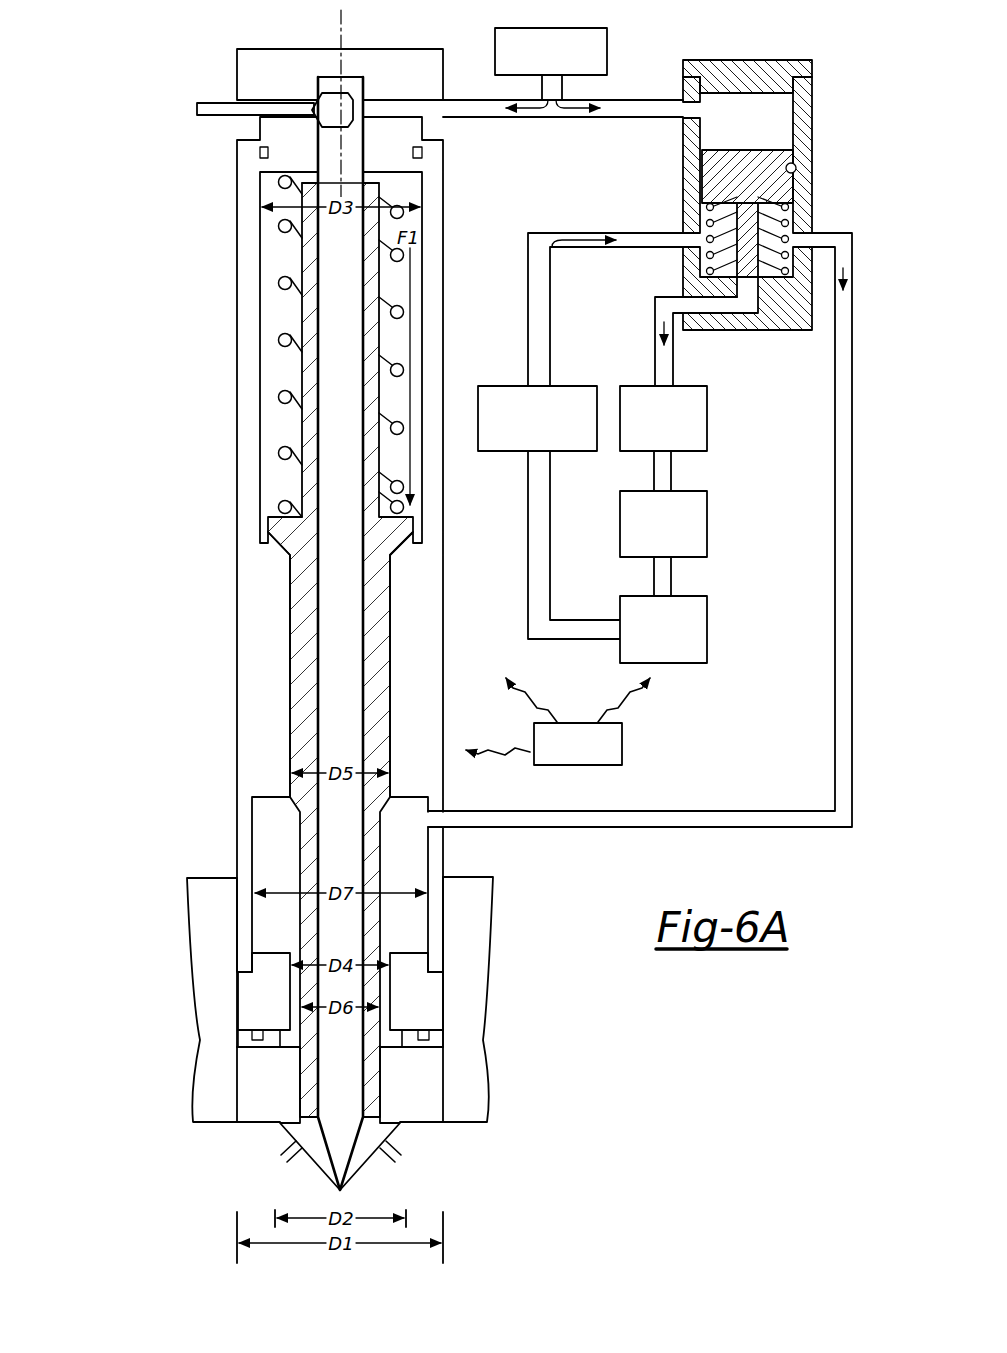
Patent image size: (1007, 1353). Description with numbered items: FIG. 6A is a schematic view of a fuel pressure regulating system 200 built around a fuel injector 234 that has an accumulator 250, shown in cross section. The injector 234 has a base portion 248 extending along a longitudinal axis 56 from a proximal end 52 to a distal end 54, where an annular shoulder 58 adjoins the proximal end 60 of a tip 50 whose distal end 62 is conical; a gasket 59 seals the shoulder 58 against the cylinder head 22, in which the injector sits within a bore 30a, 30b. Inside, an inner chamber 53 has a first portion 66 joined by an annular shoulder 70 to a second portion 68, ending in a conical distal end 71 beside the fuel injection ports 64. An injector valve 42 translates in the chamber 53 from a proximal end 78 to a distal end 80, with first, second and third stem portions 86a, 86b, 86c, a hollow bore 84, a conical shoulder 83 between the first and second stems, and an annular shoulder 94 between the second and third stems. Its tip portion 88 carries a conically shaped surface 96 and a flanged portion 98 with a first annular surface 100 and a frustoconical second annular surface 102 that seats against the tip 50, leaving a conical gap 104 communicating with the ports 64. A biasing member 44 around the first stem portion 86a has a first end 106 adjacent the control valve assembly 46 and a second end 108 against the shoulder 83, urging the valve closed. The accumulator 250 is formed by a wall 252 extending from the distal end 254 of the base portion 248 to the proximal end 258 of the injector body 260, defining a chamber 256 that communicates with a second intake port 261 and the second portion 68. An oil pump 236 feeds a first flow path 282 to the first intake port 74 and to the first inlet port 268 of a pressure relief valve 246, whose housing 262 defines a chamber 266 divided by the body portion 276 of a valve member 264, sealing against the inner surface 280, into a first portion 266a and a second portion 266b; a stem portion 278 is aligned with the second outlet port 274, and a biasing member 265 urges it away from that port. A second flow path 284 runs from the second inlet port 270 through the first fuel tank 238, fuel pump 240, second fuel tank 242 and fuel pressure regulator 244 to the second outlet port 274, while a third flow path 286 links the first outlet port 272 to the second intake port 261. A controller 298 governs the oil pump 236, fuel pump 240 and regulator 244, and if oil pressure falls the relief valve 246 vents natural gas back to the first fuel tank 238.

The fuel pressure regulating system 200 is at (125, 207).
The fuel injector 234 is at (234, 74).
The control valve assembly 46 is at (196, 109).
The proximal end 52 is at (241, 127).
The longitudinal axis 56 is at (338, 40).
The first end 106 is at (282, 181).
The biasing member 44 is at (279, 283).
The first portion 66 is at (266, 318).
The second end 108 is at (283, 508).
The longitudinally extending bore 84 is at (319, 566).
The annular flange or shoulder 83 is at (412, 548).
The annular flange or shoulder 70 is at (272, 556).
The base portion 248 is at (262, 615).
The first stem portion 86a is at (385, 345).
The second stem portion 86b is at (375, 595).
The third stem portion 86c is at (277, 863).
The proximal end 78 is at (384, 185).
The first intake port 74 is at (451, 128).
The first flow path 282 is at (494, 97).
The oil pump 236 is at (613, 33).
The inner chamber 266 is at (731, 114).
The first portion 266a is at (776, 100).
The second portion 266b is at (710, 254).
The first inlet port 268 is at (690, 104).
The pressure relief valve 246 is at (815, 99).
The valve member 264 is at (776, 146).
The housing 262 is at (814, 146).
The body portion 276 is at (716, 169).
The inner surface 280 is at (797, 170).
The second inlet port 270 is at (689, 237).
The biasing member 265 is at (787, 213).
The first outlet port 272 is at (803, 250).
The second outlet port 274 is at (752, 300).
The stem portion 278 is at (742, 268).
The second flow path 284 is at (524, 329).
The first fuel tank 238 is at (712, 405).
The fuel pump 240 is at (712, 512).
The second fuel tank 242 is at (688, 670).
The fuel pressure regulator 244 is at (507, 459).
The third flow path 286 is at (830, 636).
The controller 298 is at (647, 754).
The distal end 254 is at (270, 795).
The annular shoulder 94 is at (270, 843).
The chamber 256 is at (300, 868).
The accumulator 250 is at (226, 872).
The second intake port 261 is at (424, 820).
The axially extending flange or wall 252 is at (440, 862).
The injector valve 42 is at (383, 920).
The proximal end 258 is at (412, 950).
The injector body 260 is at (447, 997).
The gasket 59 is at (262, 1036).
The distal end 54 is at (231, 1041).
The annular shoulder 58 is at (413, 1023).
The proximal end 60 is at (407, 1050).
The first port 30a is at (242, 1071).
The second port 30b is at (280, 1088).
The second portion 68 is at (407, 1067).
The tip portion 88 is at (340, 1140).
The conically shaped space or gap 104 is at (385, 1090).
The cylinder head 22 is at (405, 1125).
The inner chamber 53 is at (395, 1063).
The second annular surface 102 is at (297, 1142).
The radially extending flanged portion 98 is at (375, 1133).
The first annular surface 100 is at (380, 1150).
The fuel injection ports 64 is at (300, 1150).
The conically shaped surface 96 is at (317, 1158).
The distal end 71 is at (320, 1180).
The distal end 80 is at (337, 1182).
The distal end 62 is at (341, 1191).
The tip portion 50 is at (378, 1166).